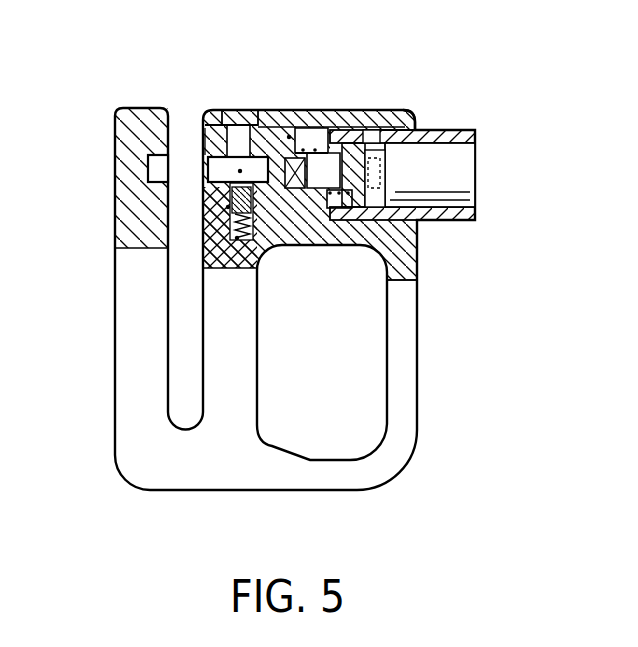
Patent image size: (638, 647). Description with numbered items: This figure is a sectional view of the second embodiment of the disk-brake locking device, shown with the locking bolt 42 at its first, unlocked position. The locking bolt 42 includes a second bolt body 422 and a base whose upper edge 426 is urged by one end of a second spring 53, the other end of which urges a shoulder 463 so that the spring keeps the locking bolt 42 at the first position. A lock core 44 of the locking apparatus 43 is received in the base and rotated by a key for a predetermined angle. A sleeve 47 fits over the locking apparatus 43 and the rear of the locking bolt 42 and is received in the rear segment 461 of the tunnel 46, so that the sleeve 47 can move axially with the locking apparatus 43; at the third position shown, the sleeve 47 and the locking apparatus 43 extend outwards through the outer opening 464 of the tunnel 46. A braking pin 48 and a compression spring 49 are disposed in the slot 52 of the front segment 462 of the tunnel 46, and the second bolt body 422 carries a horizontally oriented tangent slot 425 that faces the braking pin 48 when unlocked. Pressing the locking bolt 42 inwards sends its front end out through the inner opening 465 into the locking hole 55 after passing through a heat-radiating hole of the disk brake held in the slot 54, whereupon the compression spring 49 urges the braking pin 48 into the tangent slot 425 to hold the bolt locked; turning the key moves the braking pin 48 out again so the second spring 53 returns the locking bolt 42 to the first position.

The locking bolt 42 is at (240, 171).
The locking apparatus 43 is at (455, 170).
The lock core 44 is at (368, 202).
The tunnel 46 is at (289, 137).
The sleeve 47 is at (452, 128).
The braking pin 48 is at (228, 207).
The compression spring 49 is at (257, 268).
The slot 52 is at (237, 238).
The second spring 53 is at (305, 205).
The slot 54 is at (180, 212).
The locking hole 55 is at (156, 168).
The second bolt body 422 is at (352, 118).
The tangent slot 425 is at (305, 128).
The upper edge 426 is at (388, 113).
The rear segment 461 is at (333, 128).
The front segment 462 is at (217, 128).
The shoulder 463 is at (280, 150).
The outer opening 464 is at (428, 232).
The inner opening 465 is at (210, 128).